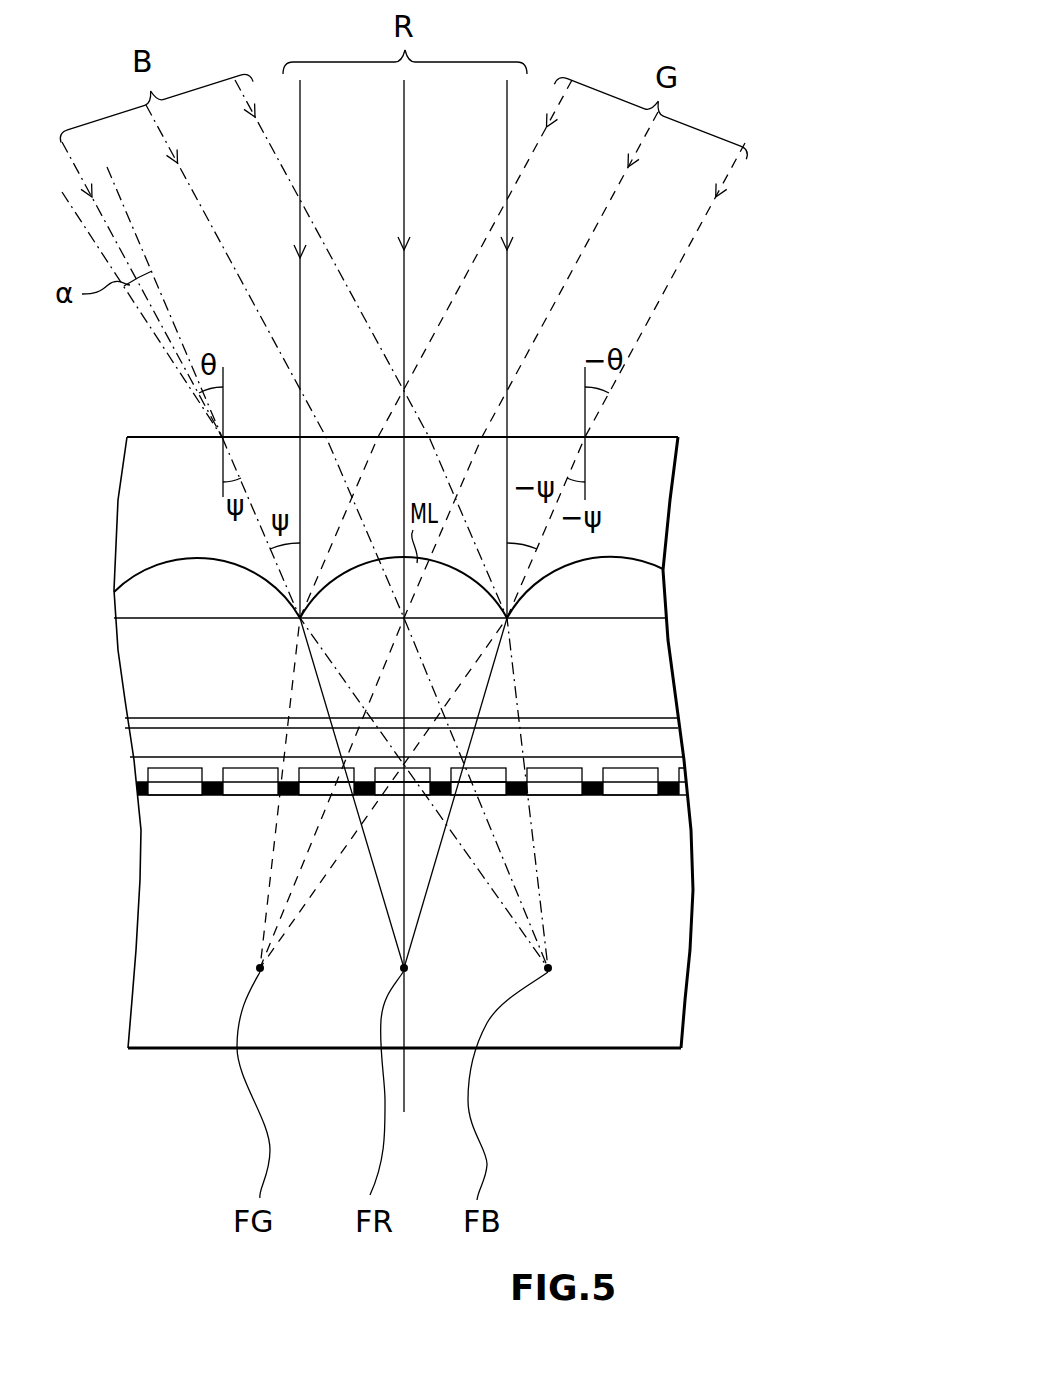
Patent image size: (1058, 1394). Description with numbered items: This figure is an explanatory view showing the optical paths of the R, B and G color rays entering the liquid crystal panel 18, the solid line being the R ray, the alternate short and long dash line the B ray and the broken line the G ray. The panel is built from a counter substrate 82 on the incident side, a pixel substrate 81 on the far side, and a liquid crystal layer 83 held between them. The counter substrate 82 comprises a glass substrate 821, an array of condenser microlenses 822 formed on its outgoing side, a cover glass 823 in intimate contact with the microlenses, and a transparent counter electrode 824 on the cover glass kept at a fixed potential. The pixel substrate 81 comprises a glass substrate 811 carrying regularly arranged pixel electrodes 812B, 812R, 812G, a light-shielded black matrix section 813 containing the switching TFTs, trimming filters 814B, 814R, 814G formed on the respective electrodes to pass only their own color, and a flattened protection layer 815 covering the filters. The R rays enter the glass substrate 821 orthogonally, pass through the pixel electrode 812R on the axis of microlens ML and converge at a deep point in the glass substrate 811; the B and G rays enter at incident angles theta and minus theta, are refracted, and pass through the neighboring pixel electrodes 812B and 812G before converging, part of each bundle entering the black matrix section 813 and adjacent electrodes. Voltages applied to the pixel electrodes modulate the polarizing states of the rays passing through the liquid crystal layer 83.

The liquid crystal panel 18 is at (830, 148).
The counter substrate 82 is at (865, 542).
The glass substrate 821 is at (640, 452).
The condenser microlenses 822 is at (640, 588).
The cover glass 823 is at (645, 643).
The counter electrode 824 is at (672, 722).
The pixel substrate 81 is at (881, 957).
The liquid crystal layer 83 is at (185, 740).
The trimming filter 814G is at (325, 778).
The trimming filter 814R is at (403, 778).
The trimming filter 814B is at (458, 778).
The protection layer 815 is at (597, 797).
The pixel electrode 812G is at (320, 797).
The pixel electrode 812R is at (410, 797).
The pixel electrode 812B is at (497, 797).
The black matrix section 813 is at (288, 797).
The glass substrate 811 is at (485, 1035).